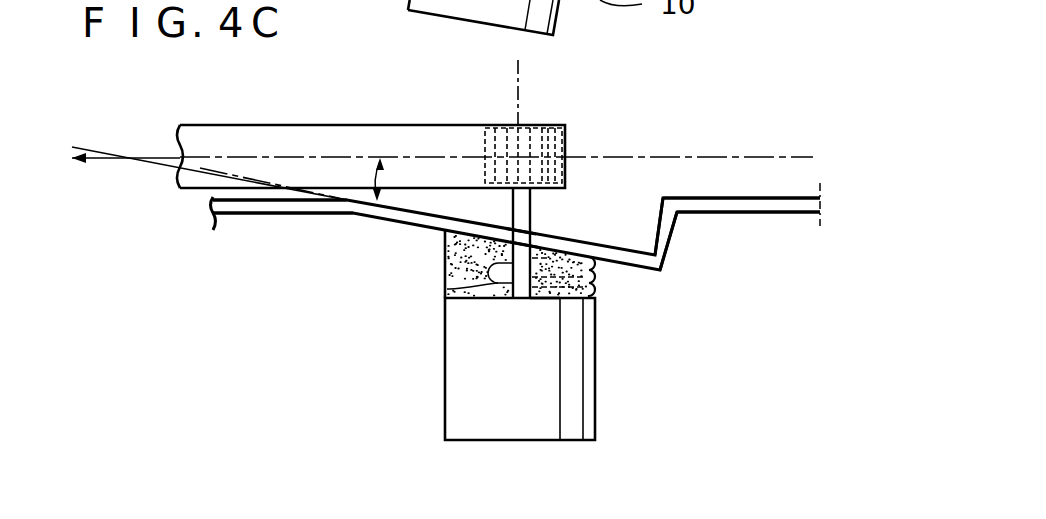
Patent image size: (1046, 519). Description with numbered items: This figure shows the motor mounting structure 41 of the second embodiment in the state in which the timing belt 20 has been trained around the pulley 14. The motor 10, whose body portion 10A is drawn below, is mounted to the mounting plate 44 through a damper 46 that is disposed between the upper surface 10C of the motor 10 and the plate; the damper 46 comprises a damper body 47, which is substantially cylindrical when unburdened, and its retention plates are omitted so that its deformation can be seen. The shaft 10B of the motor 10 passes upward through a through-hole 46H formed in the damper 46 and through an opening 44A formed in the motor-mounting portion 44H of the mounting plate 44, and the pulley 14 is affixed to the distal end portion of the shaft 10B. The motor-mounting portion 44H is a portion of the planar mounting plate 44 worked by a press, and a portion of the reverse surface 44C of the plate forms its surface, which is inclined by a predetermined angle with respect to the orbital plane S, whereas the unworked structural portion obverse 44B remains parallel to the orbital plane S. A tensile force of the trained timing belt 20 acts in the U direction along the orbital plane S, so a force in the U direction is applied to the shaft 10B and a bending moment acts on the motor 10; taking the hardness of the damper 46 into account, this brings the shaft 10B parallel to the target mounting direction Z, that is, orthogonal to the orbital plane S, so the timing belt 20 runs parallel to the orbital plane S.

The motor 10 is at (633, 415).
The container neck portion 10A is at (587, 367).
The shaft 10B is at (523, 202).
The upper surface of the motor 10C is at (545, 300).
The pulley 14 is at (540, 126).
The timing belt 20 is at (245, 124).
The motor mounting structure 41 is at (691, 93).
The mounting plate 44 is at (816, 199).
The opening 44A is at (550, 243).
The structural portion obverse 44B is at (317, 197).
The reverse surface 44C is at (757, 213).
The motor-mounting portion 44H is at (597, 242).
The damper 46 is at (612, 286).
The through-hole 46H is at (453, 287).
The damper body 47 is at (458, 265).
The U direction U is at (195, 173).
The orbital plane S is at (783, 153).
The target mounting direction Z is at (517, 74).